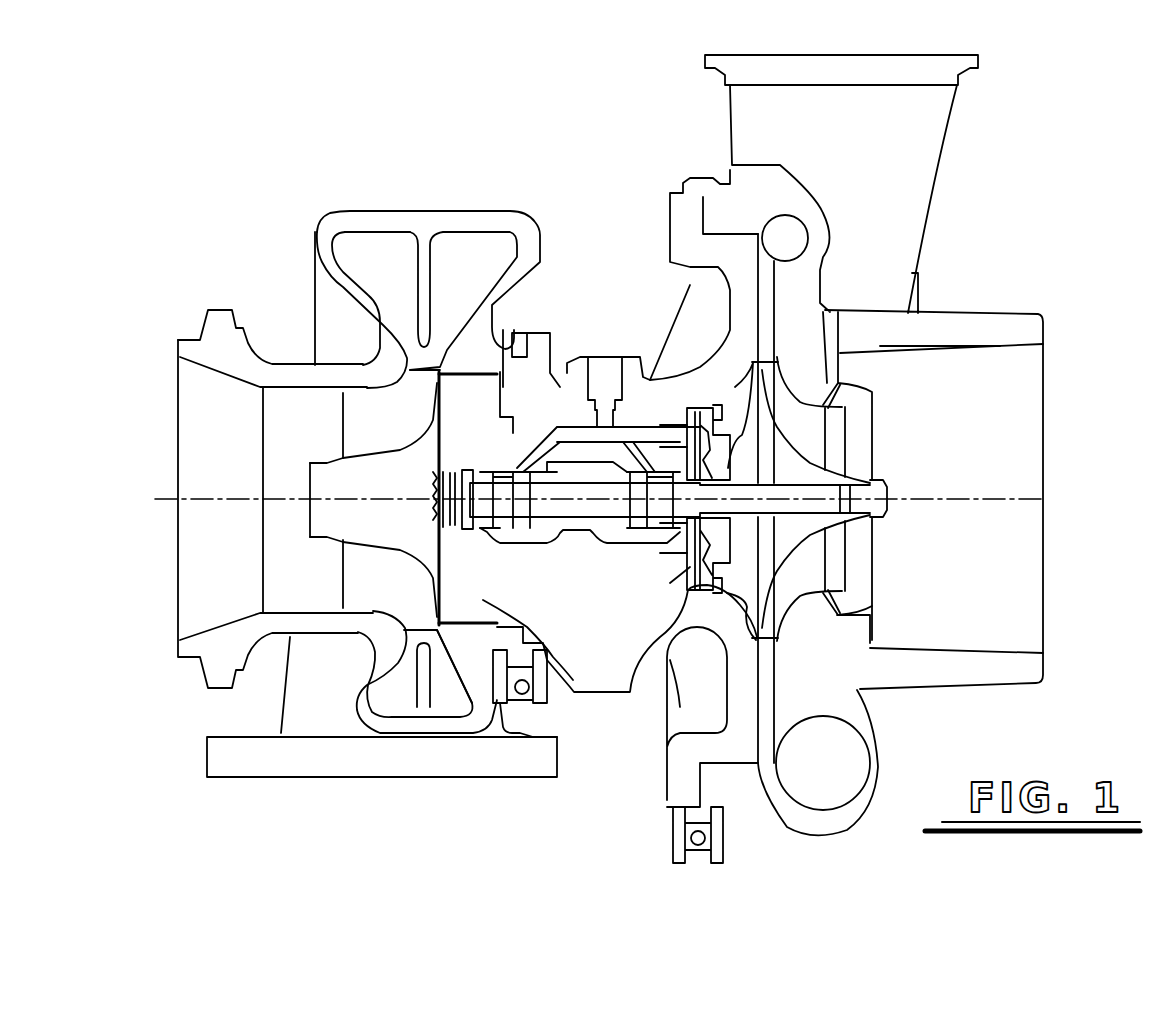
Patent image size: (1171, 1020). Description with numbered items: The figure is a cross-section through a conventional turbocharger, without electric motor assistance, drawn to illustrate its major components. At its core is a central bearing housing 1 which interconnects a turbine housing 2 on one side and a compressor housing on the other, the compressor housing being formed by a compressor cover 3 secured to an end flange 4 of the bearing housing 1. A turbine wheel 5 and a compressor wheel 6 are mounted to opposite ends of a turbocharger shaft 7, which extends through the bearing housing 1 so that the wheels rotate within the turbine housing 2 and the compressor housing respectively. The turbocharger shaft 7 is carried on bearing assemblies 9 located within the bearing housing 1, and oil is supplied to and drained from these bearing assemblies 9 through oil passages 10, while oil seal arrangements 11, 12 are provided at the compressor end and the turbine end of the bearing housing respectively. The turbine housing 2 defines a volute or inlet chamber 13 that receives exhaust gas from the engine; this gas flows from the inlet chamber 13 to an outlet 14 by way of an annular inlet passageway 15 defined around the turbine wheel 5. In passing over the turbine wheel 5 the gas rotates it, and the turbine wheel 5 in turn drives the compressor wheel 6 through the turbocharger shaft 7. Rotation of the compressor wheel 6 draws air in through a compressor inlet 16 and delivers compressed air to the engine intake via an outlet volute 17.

The central bearing housing 1 is at (633, 358).
The turbine housing 2 is at (325, 216).
The compressor cover 3 is at (977, 313).
The end flange 4 is at (688, 760).
The turbine wheel 5 is at (379, 543).
The compressor wheel 6 is at (801, 539).
The turbocharger shaft 7 is at (575, 500).
The bearing assemblies 9 is at (510, 462).
The oil passages 10 is at (600, 374).
The oil seal arrangement 11 is at (690, 472).
The oil seal arrangement 12 is at (472, 513).
The volute or inlet chamber 13 is at (377, 253).
The outlet 14 is at (223, 555).
The annular inlet passageway 15 is at (383, 750).
The compressor inlet 16 is at (985, 483).
The outlet volute 17 is at (827, 787).